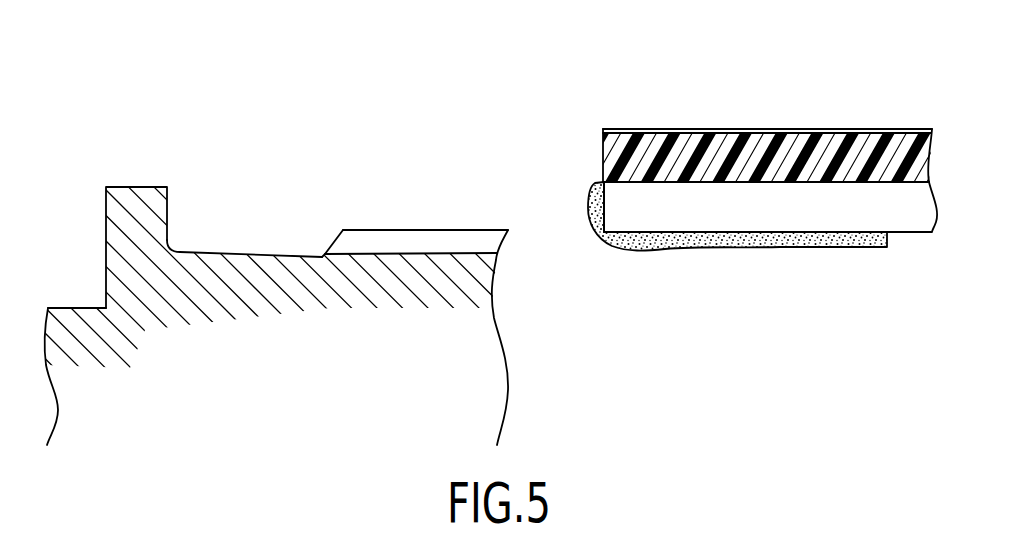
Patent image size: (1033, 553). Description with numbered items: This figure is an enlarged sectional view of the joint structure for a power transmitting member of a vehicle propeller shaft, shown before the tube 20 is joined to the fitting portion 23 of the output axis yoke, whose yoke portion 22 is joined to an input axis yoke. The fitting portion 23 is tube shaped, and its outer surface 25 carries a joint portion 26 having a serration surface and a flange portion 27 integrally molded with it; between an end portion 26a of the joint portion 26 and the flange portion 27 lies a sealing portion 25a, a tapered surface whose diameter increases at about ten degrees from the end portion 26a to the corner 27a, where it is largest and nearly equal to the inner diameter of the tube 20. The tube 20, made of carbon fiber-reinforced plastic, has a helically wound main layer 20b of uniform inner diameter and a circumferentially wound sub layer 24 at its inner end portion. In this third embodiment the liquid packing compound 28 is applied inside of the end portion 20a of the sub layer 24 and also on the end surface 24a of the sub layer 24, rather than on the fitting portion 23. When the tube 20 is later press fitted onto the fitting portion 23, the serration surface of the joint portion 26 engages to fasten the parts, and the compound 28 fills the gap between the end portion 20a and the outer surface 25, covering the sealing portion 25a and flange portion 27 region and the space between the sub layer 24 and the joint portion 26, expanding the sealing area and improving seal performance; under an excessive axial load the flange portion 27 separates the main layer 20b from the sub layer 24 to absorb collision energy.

The tube 20 is at (746, 118).
The end portion of the sub layer 20a is at (627, 200).
The main layer 20b is at (798, 157).
The yoke portion 22 is at (75, 330).
The fitting portion 23 is at (480, 390).
The sub layer 24 is at (795, 210).
The end surface of the sub layer 24a is at (596, 188).
The outer surface of the fitting portion 25 is at (372, 253).
The sealing portion 25a is at (242, 252).
The joint portion 26 is at (430, 240).
The end portion of the joint portion 26a is at (343, 241).
The flange portion 27 is at (140, 197).
The corner 27a is at (175, 252).
The liquid packing compound 28 is at (663, 238).